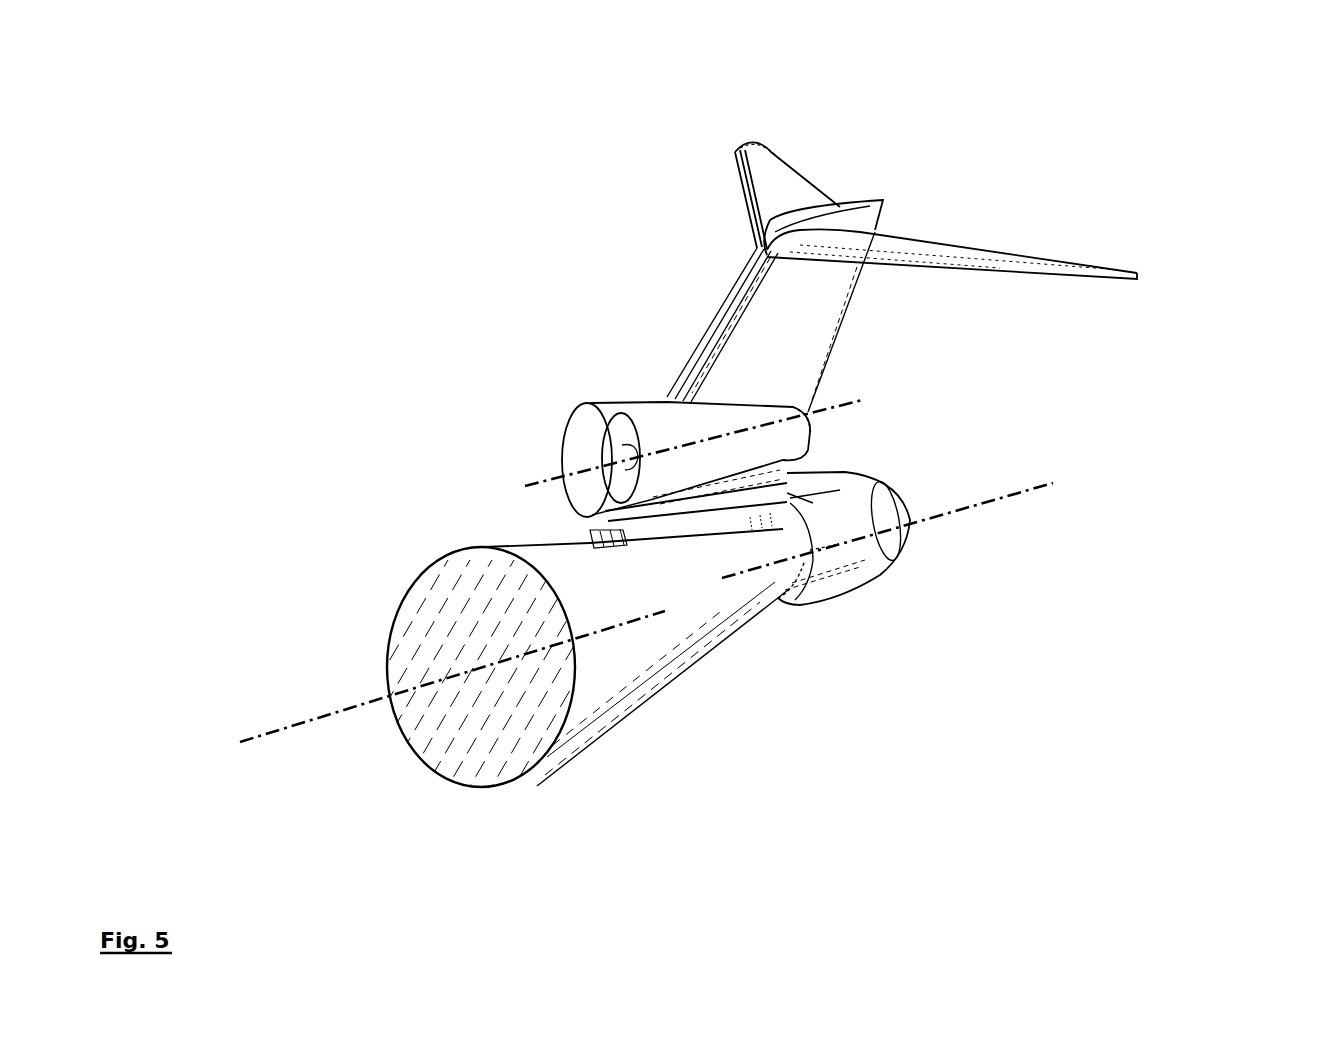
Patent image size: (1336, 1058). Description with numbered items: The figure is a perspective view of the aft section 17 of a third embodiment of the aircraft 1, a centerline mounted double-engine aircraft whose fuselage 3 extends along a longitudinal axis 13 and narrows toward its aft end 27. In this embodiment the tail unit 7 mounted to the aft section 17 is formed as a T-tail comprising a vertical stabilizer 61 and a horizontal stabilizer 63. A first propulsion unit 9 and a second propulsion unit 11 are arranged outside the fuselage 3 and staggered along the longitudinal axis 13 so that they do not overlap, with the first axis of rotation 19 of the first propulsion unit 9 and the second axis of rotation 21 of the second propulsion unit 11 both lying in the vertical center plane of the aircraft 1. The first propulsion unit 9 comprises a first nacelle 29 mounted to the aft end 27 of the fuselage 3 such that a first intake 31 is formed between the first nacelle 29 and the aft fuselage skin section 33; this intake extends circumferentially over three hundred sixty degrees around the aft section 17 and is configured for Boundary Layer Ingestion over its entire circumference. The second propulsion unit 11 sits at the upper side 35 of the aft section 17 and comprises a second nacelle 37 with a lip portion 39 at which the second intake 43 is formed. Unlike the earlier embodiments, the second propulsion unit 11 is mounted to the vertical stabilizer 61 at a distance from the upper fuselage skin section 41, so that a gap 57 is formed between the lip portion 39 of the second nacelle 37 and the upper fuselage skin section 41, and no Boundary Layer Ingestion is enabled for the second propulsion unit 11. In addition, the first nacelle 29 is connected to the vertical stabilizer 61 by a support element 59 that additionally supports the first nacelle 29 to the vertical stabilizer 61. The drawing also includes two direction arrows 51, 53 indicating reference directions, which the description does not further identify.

The aircraft 1 is at (341, 246).
The fuselage 3 is at (425, 568).
The tail unit 7 is at (984, 187).
The first propulsion unit 9 is at (855, 572).
The second propulsion unit 11 is at (651, 402).
The longitudinal axis 13 is at (265, 725).
The aft section 17 is at (692, 632).
The first axis of rotation 19 is at (993, 502).
The second axis of rotation 21 is at (838, 406).
The aft end 27 is at (787, 572).
The first nacelle 29 is at (893, 552).
The first intake 31 is at (782, 541).
The aft fuselage skin section 33 is at (807, 553).
The upper side 35 is at (701, 328).
The second nacelle 37 is at (617, 395).
The lip portion 39 is at (573, 418).
The upper fuselage skin section 41 is at (540, 552).
The second intake 43 is at (570, 450).
The longitudinal direction 51 is at (1123, 949).
The vertical direction 53 is at (1123, 949).
The gap 57 is at (583, 543).
The support element 59 is at (805, 489).
The vertical stabilizer 61 is at (752, 332).
The horizontal stabilizer 63 is at (768, 178).